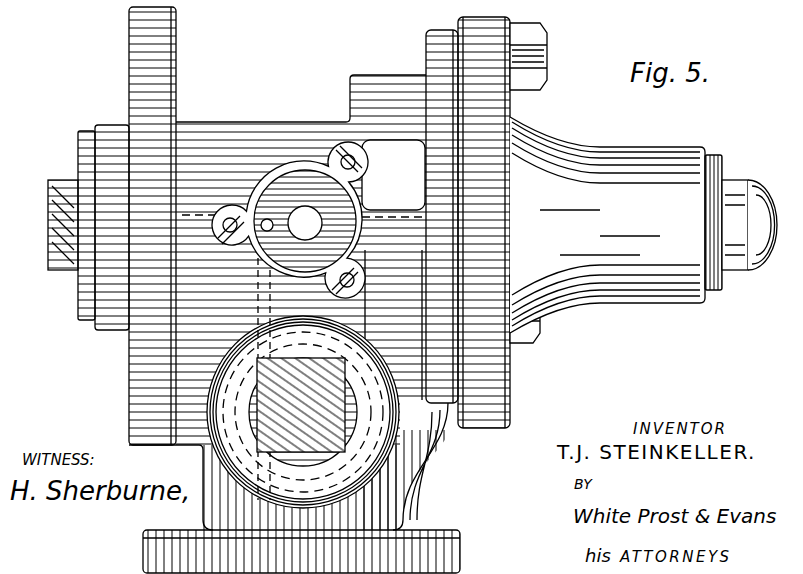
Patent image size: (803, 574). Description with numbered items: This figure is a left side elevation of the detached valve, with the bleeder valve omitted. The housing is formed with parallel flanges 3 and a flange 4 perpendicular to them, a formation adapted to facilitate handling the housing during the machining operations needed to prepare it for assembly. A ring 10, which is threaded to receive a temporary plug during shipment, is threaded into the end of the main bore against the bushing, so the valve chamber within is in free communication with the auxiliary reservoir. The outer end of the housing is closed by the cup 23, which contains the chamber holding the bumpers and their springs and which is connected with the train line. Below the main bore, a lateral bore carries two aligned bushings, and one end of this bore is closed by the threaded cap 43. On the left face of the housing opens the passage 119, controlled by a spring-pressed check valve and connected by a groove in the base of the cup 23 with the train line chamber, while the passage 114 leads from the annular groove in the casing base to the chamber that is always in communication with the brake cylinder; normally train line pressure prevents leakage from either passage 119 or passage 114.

The parallel flanges 3 is at (166, 68).
The ring 10 is at (58, 238).
The passage 119 is at (342, 232).
The passage 114 is at (303, 383).
The threaded cap 43 is at (262, 344).
The cup 23 is at (632, 214).
The flange 4 is at (462, 553).